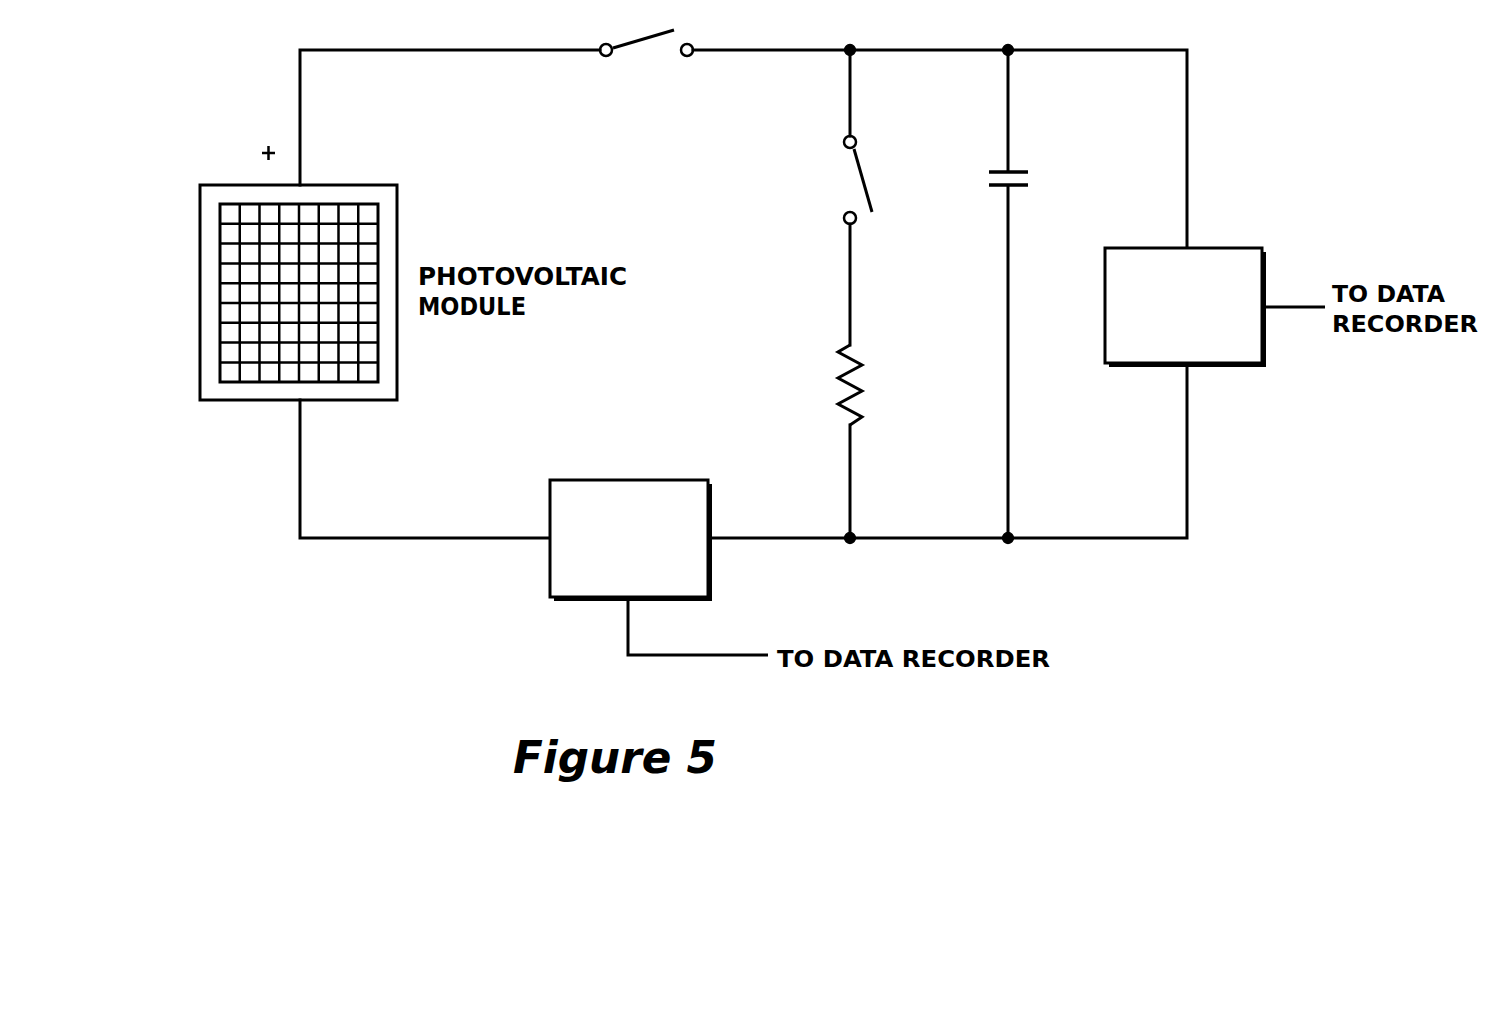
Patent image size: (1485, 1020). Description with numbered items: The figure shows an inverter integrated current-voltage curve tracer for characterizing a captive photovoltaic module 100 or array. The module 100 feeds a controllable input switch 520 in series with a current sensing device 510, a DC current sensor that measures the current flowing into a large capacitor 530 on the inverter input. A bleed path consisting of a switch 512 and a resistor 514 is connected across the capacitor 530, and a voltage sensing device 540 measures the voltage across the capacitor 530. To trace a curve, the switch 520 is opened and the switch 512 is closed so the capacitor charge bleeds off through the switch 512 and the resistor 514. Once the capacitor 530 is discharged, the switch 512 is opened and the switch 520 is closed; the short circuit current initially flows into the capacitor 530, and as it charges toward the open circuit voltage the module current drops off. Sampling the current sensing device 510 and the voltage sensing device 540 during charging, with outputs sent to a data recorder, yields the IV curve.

The photovoltaic module 100 is at (220, 183).
The current sensing device 510 is at (610, 478).
The switch 512 is at (872, 174).
The resistor 514 is at (878, 388).
The controllable switch 520 is at (651, 55).
The capacitor 530 is at (1042, 177).
The voltage sensing device 540 is at (1225, 248).